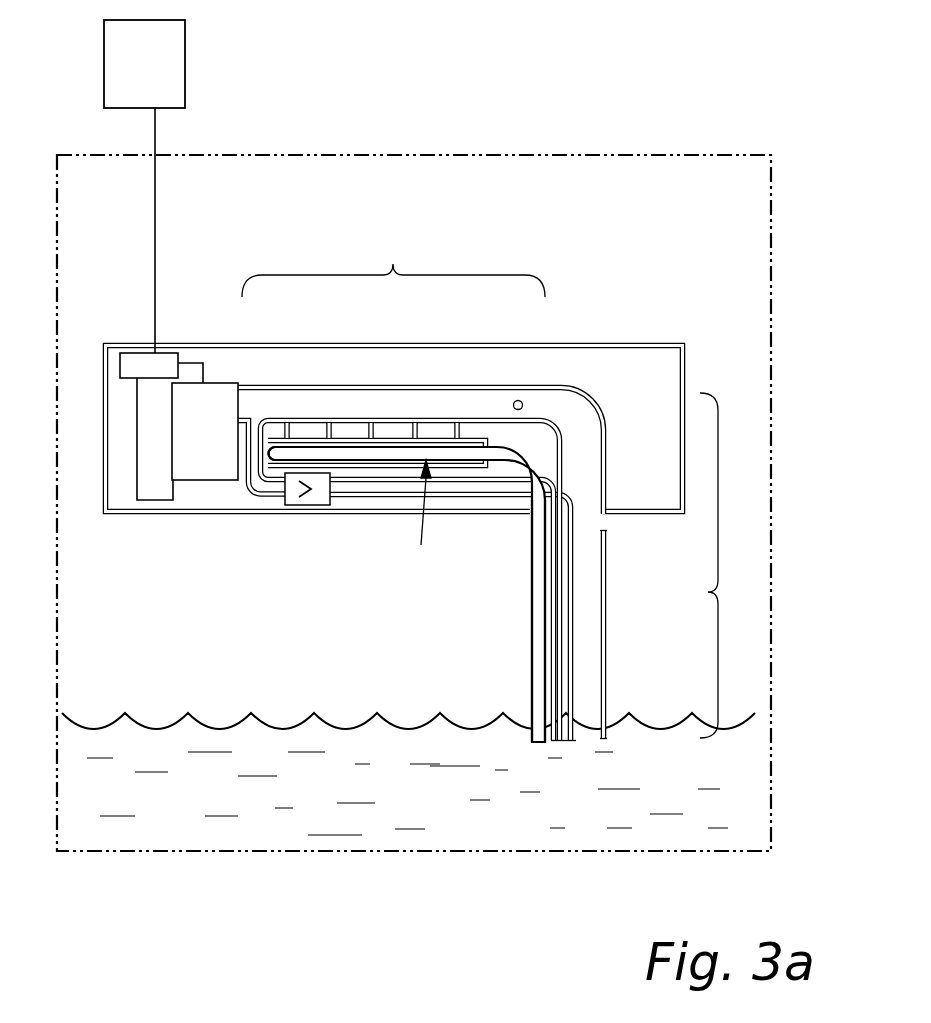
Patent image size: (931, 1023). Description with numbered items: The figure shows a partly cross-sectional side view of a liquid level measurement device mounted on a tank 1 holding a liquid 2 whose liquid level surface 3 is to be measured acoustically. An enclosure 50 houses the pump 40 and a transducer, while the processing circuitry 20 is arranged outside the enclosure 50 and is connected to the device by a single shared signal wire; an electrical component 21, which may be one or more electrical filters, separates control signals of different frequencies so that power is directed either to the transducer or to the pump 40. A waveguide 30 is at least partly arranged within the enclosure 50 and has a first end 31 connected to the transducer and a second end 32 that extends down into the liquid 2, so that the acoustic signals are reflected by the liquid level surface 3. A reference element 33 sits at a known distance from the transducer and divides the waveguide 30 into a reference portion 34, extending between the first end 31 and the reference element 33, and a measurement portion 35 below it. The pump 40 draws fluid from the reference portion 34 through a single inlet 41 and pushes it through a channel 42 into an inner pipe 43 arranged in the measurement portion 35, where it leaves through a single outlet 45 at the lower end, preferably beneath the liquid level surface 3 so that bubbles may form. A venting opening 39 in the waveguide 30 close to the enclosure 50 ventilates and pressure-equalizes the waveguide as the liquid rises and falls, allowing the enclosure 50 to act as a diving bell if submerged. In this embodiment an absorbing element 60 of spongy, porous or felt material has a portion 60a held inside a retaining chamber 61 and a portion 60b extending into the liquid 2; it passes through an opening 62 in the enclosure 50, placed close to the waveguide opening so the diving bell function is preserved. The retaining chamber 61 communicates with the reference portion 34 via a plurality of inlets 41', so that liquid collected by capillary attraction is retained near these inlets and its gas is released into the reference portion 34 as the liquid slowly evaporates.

The tank 1 is at (378, 153).
The liquid 2 is at (558, 828).
The liquid level surface 3 is at (343, 716).
The processing circuitry 20 is at (168, 64).
The electrical component 21 is at (168, 350).
The waveguide 30 is at (604, 422).
The first end 31 is at (262, 418).
The second end 32 is at (607, 735).
The reference element 33 is at (520, 400).
The reference portion 34 is at (393, 259).
The measurement portion 35 is at (733, 565).
The venting opening 39 is at (607, 528).
The pump 40 is at (172, 478).
The inlet 41 is at (368, 380).
The plurality of inlets 41' is at (372, 364).
The channel 42 is at (250, 488).
The inner pipe 43 is at (575, 648).
The single outlet 45 is at (575, 740).
The enclosure 50 is at (118, 343).
The absorbing element 60 is at (497, 452).
The portion of the absorbing element inside the retaining chamber 60a is at (409, 520).
The portion of the absorbing element extending into the liquid 60b is at (528, 699).
The retaining chamber 61 is at (262, 470).
The opening 62 is at (528, 513).